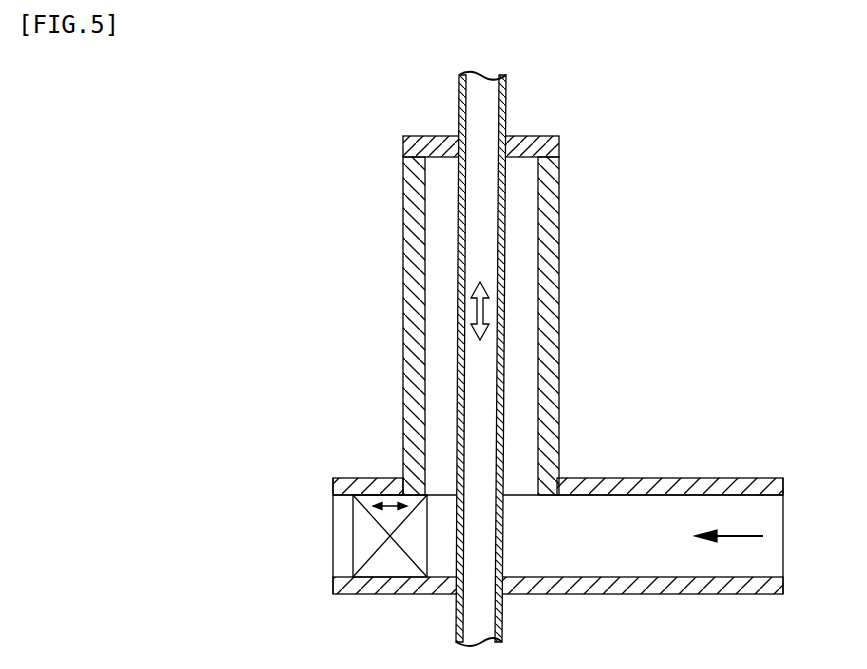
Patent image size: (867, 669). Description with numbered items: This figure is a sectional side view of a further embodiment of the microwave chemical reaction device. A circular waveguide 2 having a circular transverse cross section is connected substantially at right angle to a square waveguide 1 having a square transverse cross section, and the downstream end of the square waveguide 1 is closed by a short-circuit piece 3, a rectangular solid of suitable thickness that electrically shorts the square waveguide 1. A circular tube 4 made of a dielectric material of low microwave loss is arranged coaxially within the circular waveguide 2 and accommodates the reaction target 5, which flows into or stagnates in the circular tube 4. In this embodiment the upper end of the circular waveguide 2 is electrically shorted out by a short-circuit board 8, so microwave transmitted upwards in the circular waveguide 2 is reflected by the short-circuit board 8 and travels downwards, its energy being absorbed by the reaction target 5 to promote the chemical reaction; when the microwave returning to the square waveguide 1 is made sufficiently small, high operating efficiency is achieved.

The square waveguide 1 is at (700, 480).
The circular waveguide 2 is at (412, 313).
The short-circuit piece 3 is at (368, 538).
The circular tube 4 is at (505, 265).
The reaction target 5 is at (483, 312).
The short-circuit board 8 is at (528, 137).